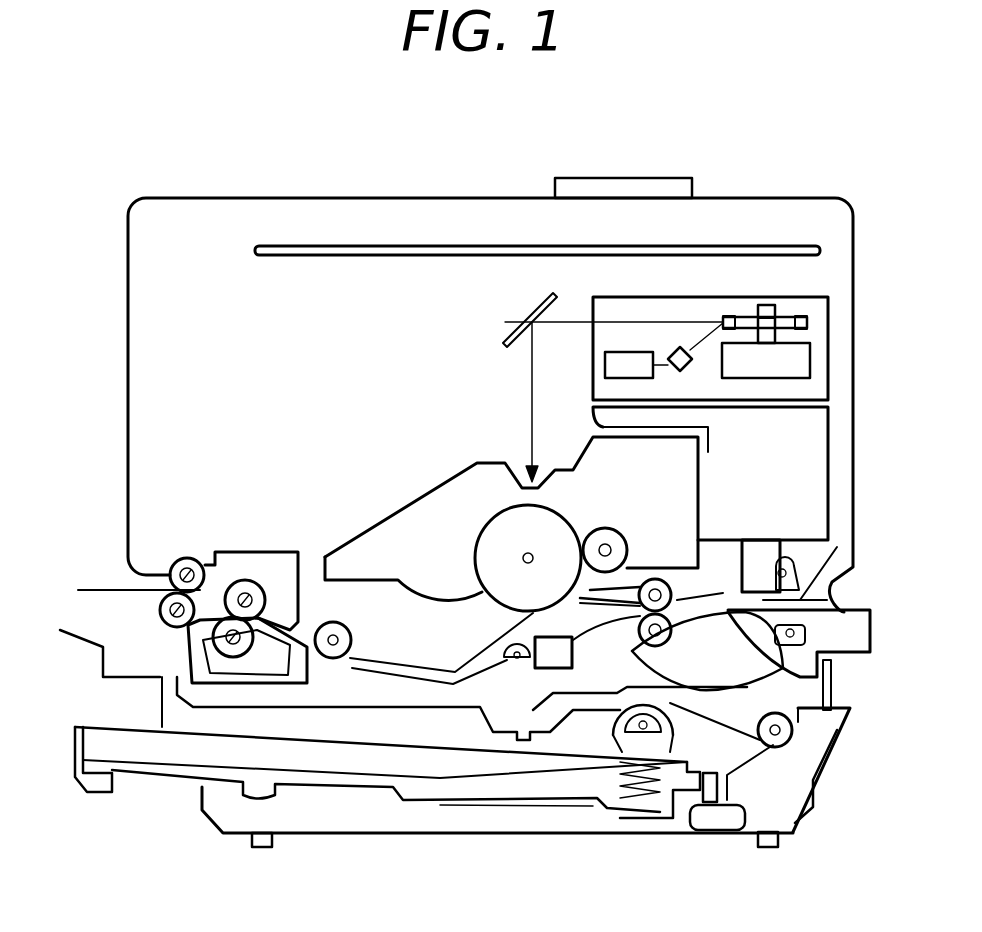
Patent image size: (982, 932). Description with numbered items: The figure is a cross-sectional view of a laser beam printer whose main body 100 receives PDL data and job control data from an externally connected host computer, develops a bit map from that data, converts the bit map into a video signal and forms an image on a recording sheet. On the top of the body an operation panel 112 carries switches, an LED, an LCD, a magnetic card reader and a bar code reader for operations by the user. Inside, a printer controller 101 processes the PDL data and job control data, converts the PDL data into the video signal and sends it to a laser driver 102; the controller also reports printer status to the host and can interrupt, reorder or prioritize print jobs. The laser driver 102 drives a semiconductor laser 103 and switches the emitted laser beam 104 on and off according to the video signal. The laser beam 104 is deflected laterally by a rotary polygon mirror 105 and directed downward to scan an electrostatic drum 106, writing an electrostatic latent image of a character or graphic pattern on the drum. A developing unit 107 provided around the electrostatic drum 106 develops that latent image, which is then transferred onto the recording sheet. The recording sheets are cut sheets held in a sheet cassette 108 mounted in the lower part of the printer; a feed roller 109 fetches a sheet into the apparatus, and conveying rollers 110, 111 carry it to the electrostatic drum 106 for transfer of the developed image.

The main body 100 is at (770, 196).
The printer controller 101 is at (718, 248).
The laser driver 102 is at (603, 363).
The semiconductor laser 103 is at (688, 366).
The laser beam 104 is at (660, 320).
The rotary polygon mirror 105 is at (805, 322).
The electrostatic drum 106 is at (497, 520).
The developing unit 107 is at (395, 538).
The sheet cassette 108 is at (78, 765).
The feed roller 109 is at (643, 732).
The conveying roller 110 is at (773, 748).
The conveying roller 111 is at (647, 651).
The operation panel 112 is at (651, 193).